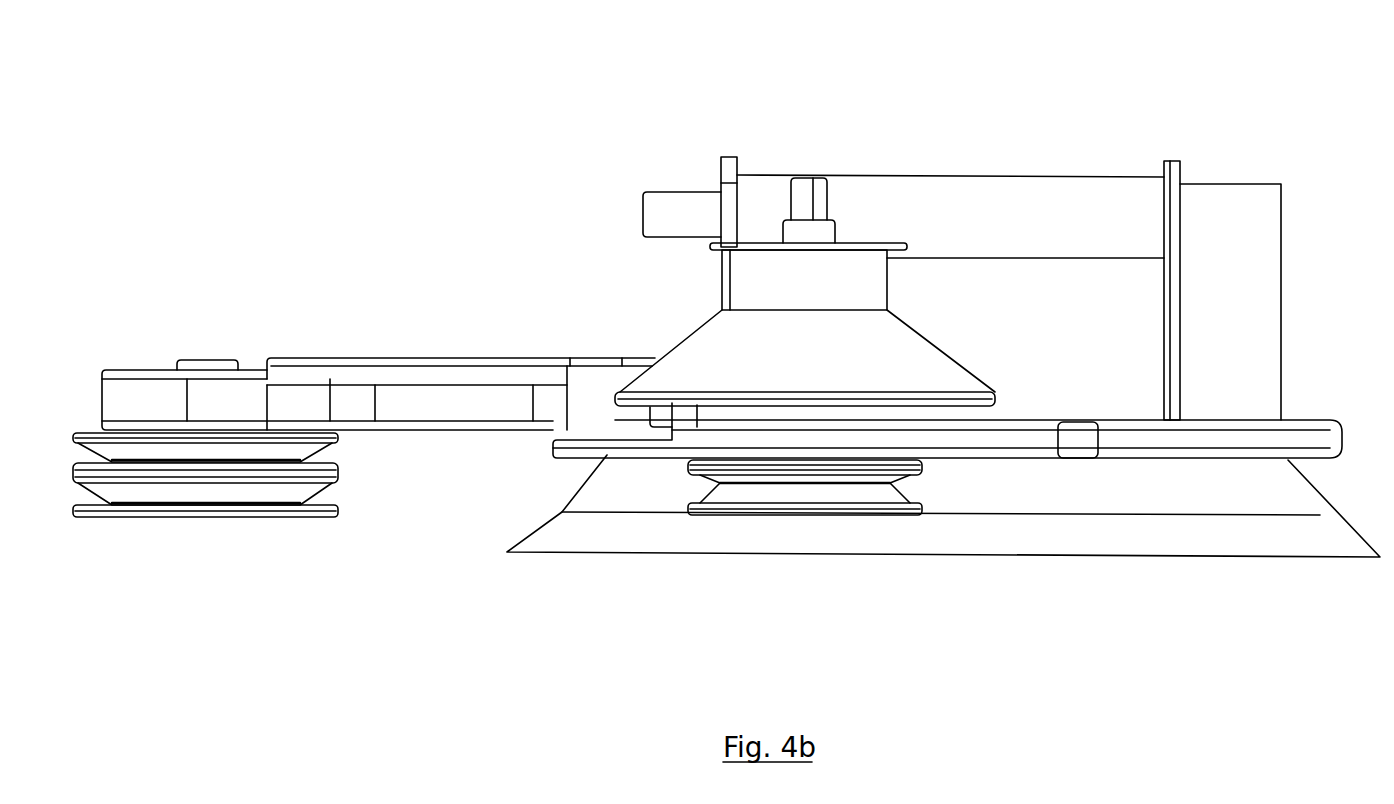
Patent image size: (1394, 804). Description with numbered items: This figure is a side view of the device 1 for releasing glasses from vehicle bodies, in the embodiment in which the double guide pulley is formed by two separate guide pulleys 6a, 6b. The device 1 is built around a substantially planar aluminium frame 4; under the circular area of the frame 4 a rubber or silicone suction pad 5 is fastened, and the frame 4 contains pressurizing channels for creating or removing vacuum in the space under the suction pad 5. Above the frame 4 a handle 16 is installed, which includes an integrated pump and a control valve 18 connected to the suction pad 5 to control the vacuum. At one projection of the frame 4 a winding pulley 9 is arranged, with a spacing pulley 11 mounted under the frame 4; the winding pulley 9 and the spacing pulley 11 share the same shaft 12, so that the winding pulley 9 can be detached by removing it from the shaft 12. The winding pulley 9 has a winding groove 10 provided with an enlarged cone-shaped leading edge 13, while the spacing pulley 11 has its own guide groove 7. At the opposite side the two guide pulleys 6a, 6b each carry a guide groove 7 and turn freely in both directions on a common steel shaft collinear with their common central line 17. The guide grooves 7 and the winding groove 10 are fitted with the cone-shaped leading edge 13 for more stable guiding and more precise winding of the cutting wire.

The device 1 is at (871, 127).
The frame 4 is at (482, 410).
The suction pad 5 is at (748, 535).
The guide pulley 6a is at (75, 432).
The guide pulley 6b is at (78, 520).
The guide groove 7 is at (333, 458).
The winding pulley 9 is at (647, 320).
The winding groove 10 is at (855, 282).
The spacing pulley 11 is at (935, 478).
The shaft 12 is at (822, 238).
The cone-shaped leading edge 13 is at (905, 370).
The handle 16 is at (1098, 207).
The common central line 17 is at (212, 343).
The control valve 18 is at (673, 188).